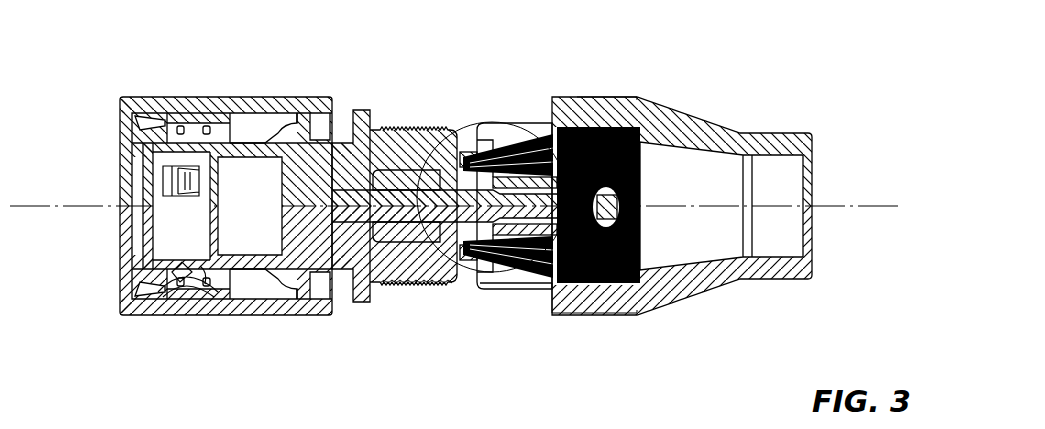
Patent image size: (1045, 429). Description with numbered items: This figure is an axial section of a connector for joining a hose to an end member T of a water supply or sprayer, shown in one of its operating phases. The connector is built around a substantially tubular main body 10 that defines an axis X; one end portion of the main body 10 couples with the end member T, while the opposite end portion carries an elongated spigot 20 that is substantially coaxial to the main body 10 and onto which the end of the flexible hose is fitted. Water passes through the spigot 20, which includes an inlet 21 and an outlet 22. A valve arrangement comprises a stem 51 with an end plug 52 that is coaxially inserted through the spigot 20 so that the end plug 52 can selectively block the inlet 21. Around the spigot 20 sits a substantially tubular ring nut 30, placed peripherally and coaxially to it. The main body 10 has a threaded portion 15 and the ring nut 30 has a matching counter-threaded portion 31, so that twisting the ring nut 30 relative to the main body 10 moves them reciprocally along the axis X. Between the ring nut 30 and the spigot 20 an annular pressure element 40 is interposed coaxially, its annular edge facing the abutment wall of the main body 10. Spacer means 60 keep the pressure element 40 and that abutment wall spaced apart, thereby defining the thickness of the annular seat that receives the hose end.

The end member T is at (167, 97).
The main body 10 is at (340, 97).
The threaded portion 15 is at (392, 110).
The spigot 20 is at (503, 112).
The inlet 21 is at (555, 300).
The outlet 22 is at (438, 283).
The ring nut 30 is at (655, 107).
The counter-threaded portion 31 is at (600, 100).
The annular pressure element 40 is at (545, 112).
The stem 51 is at (510, 285).
The end plug 52 is at (613, 302).
The spacer means 60 is at (450, 108).
The axis X is at (871, 206).